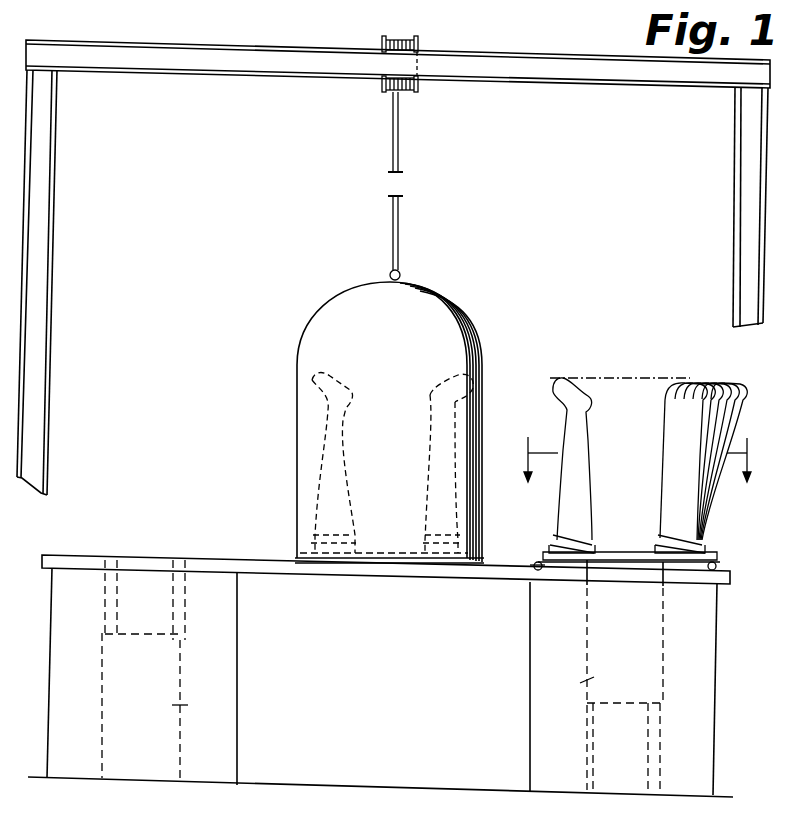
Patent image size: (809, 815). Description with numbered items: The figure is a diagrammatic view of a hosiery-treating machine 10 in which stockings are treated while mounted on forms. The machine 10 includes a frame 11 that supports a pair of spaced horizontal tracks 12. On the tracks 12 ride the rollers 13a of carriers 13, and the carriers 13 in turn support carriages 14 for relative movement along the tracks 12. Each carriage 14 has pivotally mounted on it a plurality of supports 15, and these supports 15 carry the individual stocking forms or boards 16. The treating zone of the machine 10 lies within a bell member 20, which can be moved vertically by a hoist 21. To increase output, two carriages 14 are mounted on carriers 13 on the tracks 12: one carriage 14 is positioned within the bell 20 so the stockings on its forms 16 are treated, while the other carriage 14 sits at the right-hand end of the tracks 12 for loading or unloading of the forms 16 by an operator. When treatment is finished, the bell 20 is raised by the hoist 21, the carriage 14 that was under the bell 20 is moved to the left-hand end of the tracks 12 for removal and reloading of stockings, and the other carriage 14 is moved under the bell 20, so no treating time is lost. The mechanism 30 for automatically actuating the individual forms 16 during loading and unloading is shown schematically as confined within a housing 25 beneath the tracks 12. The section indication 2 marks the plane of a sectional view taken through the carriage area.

The hosiery-treating machine 10 is at (577, 230).
The frame 11 is at (665, 75).
The horizontal tracks 12 is at (497, 573).
The carriers 13 is at (536, 560).
The rollers 13a is at (534, 563).
The carriages 14 is at (395, 552).
The supports 15 is at (570, 541).
The stocking forms 16 is at (675, 465).
The bell member 20 is at (447, 302).
The hoist 21 is at (418, 88).
The housing 25 is at (226, 610).
The mechanism 30 is at (188, 705).
The section line 2- 2 is at (636, 466).